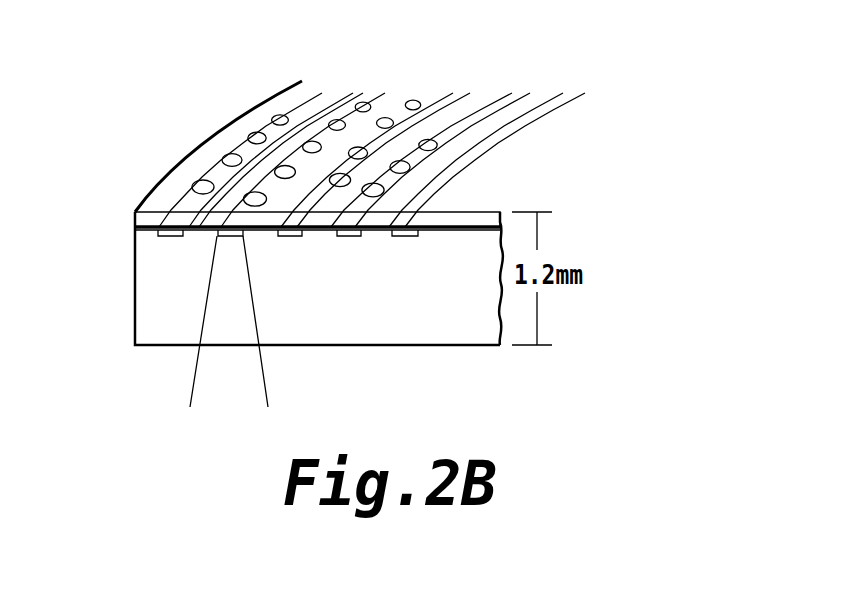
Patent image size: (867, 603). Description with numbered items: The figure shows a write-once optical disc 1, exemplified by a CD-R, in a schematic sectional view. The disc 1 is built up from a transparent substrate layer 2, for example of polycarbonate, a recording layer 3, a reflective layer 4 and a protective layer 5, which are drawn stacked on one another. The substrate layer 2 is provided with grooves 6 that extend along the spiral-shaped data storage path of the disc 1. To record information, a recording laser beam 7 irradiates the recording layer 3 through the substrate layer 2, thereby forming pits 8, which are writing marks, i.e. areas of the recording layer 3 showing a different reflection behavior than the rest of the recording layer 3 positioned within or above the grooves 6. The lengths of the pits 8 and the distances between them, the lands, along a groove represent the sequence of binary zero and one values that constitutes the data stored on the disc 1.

The disc 1 is at (358, 349).
The substrate layer 2 is at (148, 300).
The recording layer 3 is at (170, 233).
The reflective layer 4 is at (460, 215).
The protective layer 5 is at (513, 157).
The grooves 6 is at (350, 237).
The recording laser beam 7 is at (203, 373).
The pits 8 is at (245, 142).